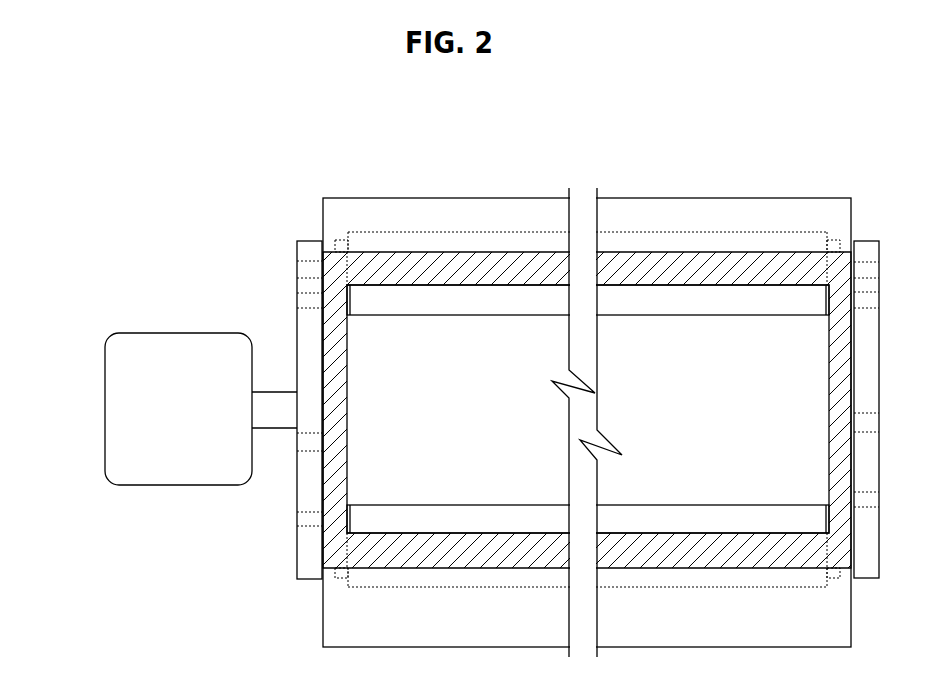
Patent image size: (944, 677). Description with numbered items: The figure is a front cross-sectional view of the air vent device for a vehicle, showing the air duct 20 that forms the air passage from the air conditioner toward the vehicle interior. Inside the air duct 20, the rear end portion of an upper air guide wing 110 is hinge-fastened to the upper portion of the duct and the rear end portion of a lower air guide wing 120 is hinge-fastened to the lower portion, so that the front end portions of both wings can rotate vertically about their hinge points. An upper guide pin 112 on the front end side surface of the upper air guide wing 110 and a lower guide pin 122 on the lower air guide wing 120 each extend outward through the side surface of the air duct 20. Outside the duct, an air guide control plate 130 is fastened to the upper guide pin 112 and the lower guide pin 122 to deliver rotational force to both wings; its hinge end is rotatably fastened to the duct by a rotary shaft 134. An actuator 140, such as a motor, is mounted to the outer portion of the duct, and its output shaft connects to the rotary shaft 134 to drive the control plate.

The air duct 20 is at (447, 240).
The upper air guide wing 110 is at (657, 328).
The lower air guide wing 120 is at (745, 493).
The air guide control plate 130 is at (291, 232).
The upper guide pin 112 is at (305, 298).
The lower guide pin 122 is at (302, 517).
The rotary shaft 134 is at (273, 420).
The actuator 140 is at (114, 417).